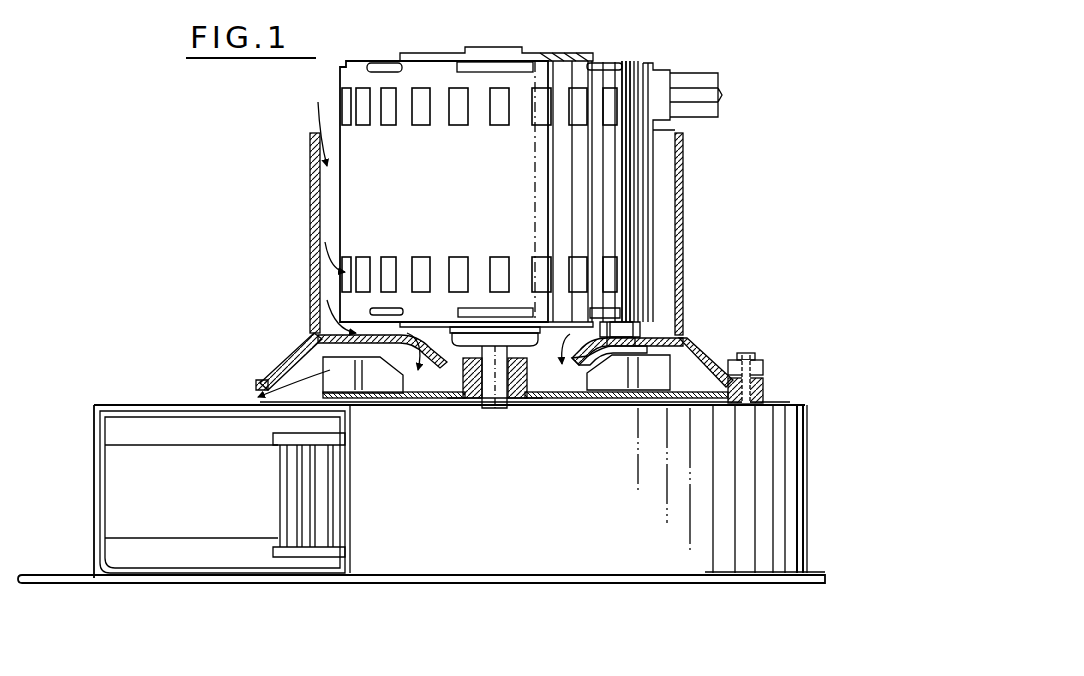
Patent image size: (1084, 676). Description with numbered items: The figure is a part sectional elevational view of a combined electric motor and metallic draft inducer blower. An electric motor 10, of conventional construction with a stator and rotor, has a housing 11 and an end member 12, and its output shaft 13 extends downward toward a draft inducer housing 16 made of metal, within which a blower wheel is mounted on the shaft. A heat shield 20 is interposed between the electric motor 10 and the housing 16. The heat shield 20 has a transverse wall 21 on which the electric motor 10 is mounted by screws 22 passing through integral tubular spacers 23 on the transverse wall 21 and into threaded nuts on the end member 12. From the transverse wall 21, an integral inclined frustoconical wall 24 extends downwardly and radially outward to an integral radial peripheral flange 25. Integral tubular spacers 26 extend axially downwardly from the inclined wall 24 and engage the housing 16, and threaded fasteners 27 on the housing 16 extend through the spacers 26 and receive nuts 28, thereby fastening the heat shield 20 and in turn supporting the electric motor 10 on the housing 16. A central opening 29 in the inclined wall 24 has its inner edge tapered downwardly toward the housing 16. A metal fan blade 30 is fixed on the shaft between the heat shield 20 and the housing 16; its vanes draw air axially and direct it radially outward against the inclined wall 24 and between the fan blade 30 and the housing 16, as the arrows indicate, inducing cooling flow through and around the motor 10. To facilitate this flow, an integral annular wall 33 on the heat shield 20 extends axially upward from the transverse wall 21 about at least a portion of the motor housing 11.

The electric motor 10 is at (604, 54).
The housing 11 is at (483, 203).
The end member 12 is at (548, 53).
The output shaft 13 is at (495, 404).
The housing of a draft inducer 16 is at (612, 556).
The heat shield 20 is at (287, 353).
The transverse wall 21 is at (323, 334).
The screws 22 is at (650, 318).
The integral tubular spacers 23 is at (690, 328).
The inclined frustoconical wall 24 is at (700, 360).
The radial peripheral flange 25 is at (262, 380).
The integral tubular spacers 26 is at (764, 392).
The threaded fasteners 27 is at (747, 403).
The nuts 28 is at (756, 368).
The central opening 29 is at (542, 352).
The fan blade 30 is at (555, 398).
The integral annular wall 33 is at (683, 223).